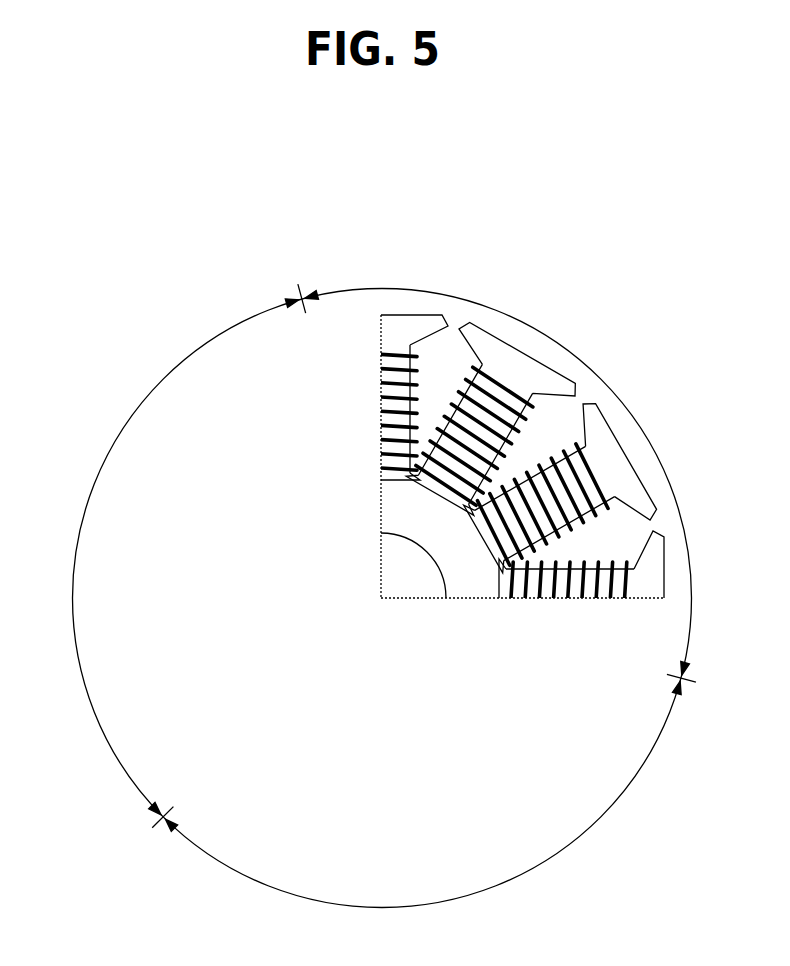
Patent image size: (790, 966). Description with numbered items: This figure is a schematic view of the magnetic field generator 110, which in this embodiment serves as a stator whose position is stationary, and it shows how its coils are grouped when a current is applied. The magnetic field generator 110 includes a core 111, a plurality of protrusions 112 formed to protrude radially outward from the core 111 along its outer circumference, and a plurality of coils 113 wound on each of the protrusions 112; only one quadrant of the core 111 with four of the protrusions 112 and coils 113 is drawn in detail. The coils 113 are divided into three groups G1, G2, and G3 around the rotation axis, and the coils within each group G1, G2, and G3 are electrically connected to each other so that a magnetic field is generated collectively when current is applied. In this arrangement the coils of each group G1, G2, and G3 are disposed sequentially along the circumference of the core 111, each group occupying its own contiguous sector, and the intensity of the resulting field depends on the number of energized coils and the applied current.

The magnetic field generator 110 is at (489, 503).
The core 111 is at (483, 598).
The protrusion 112 is at (644, 598).
The coil 113 is at (560, 598).
The first group G1 is at (454, 329).
The second group G2 is at (116, 670).
The third group G3 is at (576, 797).